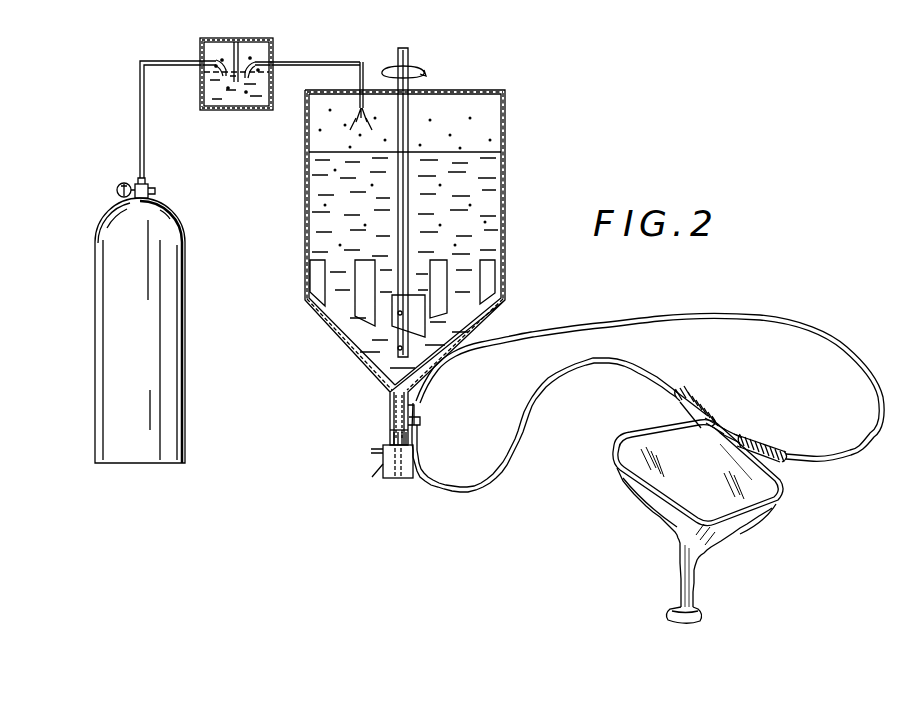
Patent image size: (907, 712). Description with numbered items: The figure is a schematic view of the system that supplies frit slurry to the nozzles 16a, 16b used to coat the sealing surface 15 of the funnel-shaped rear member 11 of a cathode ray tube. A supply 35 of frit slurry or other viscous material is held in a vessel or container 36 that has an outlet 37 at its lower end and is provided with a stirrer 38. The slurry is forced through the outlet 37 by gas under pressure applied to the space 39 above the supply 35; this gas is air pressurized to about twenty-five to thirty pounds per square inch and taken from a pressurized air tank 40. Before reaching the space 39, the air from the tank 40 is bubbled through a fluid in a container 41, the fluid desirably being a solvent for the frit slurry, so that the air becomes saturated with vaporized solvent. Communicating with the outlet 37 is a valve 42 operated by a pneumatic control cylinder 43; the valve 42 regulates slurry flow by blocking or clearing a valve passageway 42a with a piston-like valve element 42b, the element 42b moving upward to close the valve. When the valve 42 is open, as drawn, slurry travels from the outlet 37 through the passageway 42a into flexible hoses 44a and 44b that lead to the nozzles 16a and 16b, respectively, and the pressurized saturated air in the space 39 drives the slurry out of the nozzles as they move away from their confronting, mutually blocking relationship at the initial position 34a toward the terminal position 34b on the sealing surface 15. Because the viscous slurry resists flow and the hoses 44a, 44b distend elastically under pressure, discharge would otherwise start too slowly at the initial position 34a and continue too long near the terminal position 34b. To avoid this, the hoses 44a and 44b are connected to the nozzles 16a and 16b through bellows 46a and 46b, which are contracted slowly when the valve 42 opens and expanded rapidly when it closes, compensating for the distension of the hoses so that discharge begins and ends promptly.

The funnel-shaped rear member 11 is at (668, 512).
The sealing surface 15 is at (752, 510).
The nozzle 16a is at (728, 435).
The nozzle 16b is at (712, 422).
The initial position 34a is at (722, 446).
The terminal position 34b is at (652, 492).
The supply of frit slurry 35 is at (490, 205).
The vessel or container 36 is at (505, 101).
The outlet 37 is at (397, 398).
The stirrer 38 is at (340, 322).
The space 39 is at (322, 135).
The pressurized air tank 40 is at (177, 327).
The container 41 is at (270, 30).
The valve 42 is at (372, 425).
The valve passageway 42a is at (395, 420).
The piston-like valve element 42b is at (393, 438).
The pneumatic control cylinder 43 is at (413, 470).
The flexible hose 44a is at (582, 325).
The flexible hose 44b is at (540, 405).
The bellows 46a is at (780, 451).
The bellows 46b is at (690, 395).